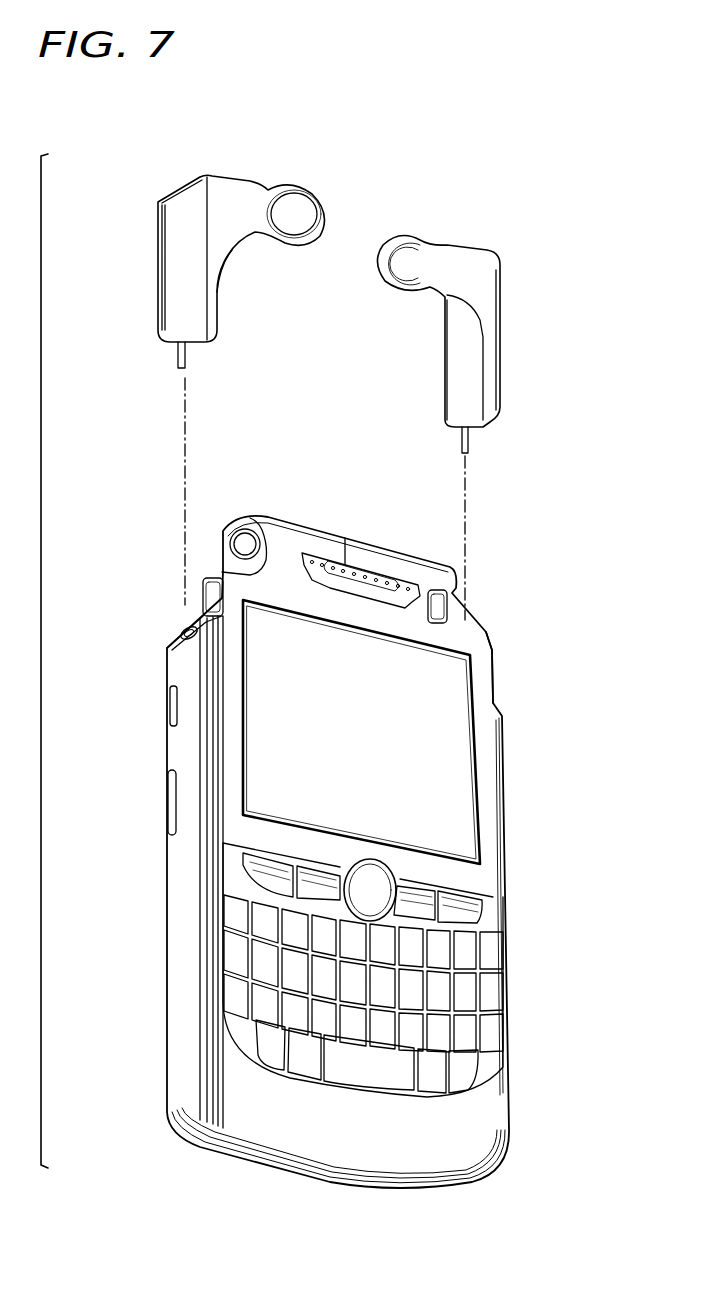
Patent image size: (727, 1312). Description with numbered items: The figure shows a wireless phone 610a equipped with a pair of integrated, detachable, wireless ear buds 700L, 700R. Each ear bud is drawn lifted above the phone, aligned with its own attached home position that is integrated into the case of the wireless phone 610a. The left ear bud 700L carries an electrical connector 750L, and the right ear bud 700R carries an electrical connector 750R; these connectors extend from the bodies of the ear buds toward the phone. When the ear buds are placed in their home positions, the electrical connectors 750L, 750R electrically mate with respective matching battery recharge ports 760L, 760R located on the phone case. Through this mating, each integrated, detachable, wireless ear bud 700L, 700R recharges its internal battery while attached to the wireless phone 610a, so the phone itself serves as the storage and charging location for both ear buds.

The integrated, detachable, wireless ear bud 700L is at (178, 252).
The electrical connector 750L is at (170, 357).
The battery recharge port 760L is at (178, 626).
The integrated, detachable, wireless ear bud 700R is at (495, 314).
The electrical connector 750R is at (475, 446).
The battery recharge port 760R is at (495, 672).
The wireless phone 610a is at (508, 881).